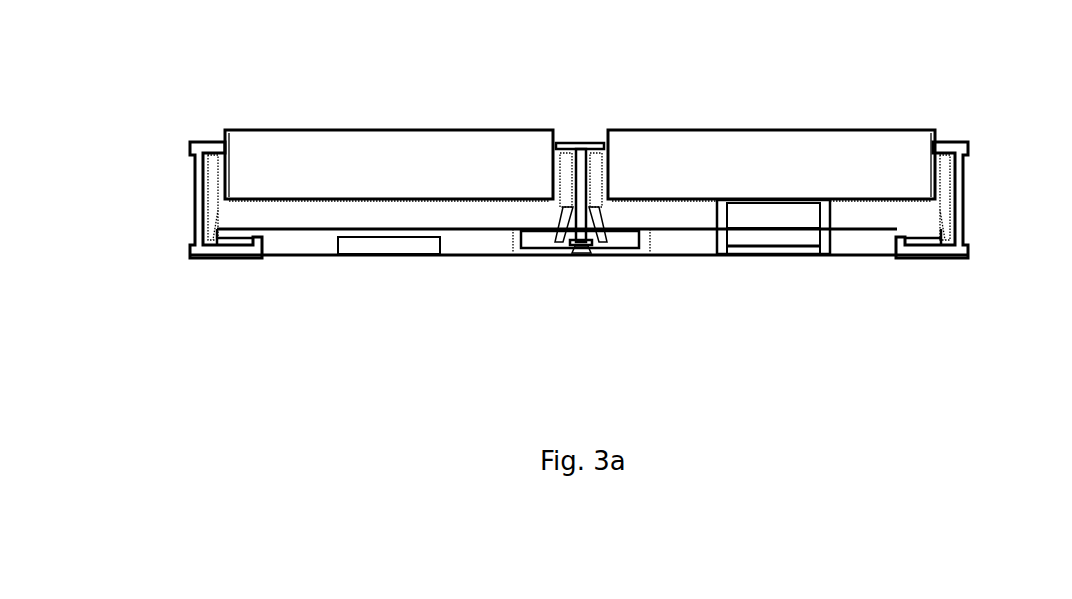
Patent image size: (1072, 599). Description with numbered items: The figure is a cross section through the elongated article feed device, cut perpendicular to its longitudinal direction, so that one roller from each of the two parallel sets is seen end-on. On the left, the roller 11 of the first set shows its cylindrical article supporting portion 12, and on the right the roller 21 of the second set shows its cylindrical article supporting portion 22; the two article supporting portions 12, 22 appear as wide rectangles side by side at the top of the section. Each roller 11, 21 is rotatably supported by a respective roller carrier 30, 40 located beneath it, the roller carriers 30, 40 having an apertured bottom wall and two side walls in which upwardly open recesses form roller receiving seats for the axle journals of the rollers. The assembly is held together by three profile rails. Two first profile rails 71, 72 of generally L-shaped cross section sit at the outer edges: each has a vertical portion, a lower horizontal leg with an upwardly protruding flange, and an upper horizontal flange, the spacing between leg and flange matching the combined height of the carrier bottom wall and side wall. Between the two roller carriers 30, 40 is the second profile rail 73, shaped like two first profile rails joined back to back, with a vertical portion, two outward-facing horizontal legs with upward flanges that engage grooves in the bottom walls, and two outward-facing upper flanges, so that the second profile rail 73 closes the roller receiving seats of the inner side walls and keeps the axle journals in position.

The roller 11 is at (379, 126).
The cylindrical article supporting portion 12 is at (460, 128).
The roller 21 is at (756, 126).
The cylindrical article supporting portion 22 is at (843, 129).
The roller carrier 30 is at (455, 257).
The roller carrier 40 is at (830, 257).
The first profile rail 71 is at (196, 201).
The first profile rail 72 is at (966, 193).
The second profile rail 73 is at (572, 133).